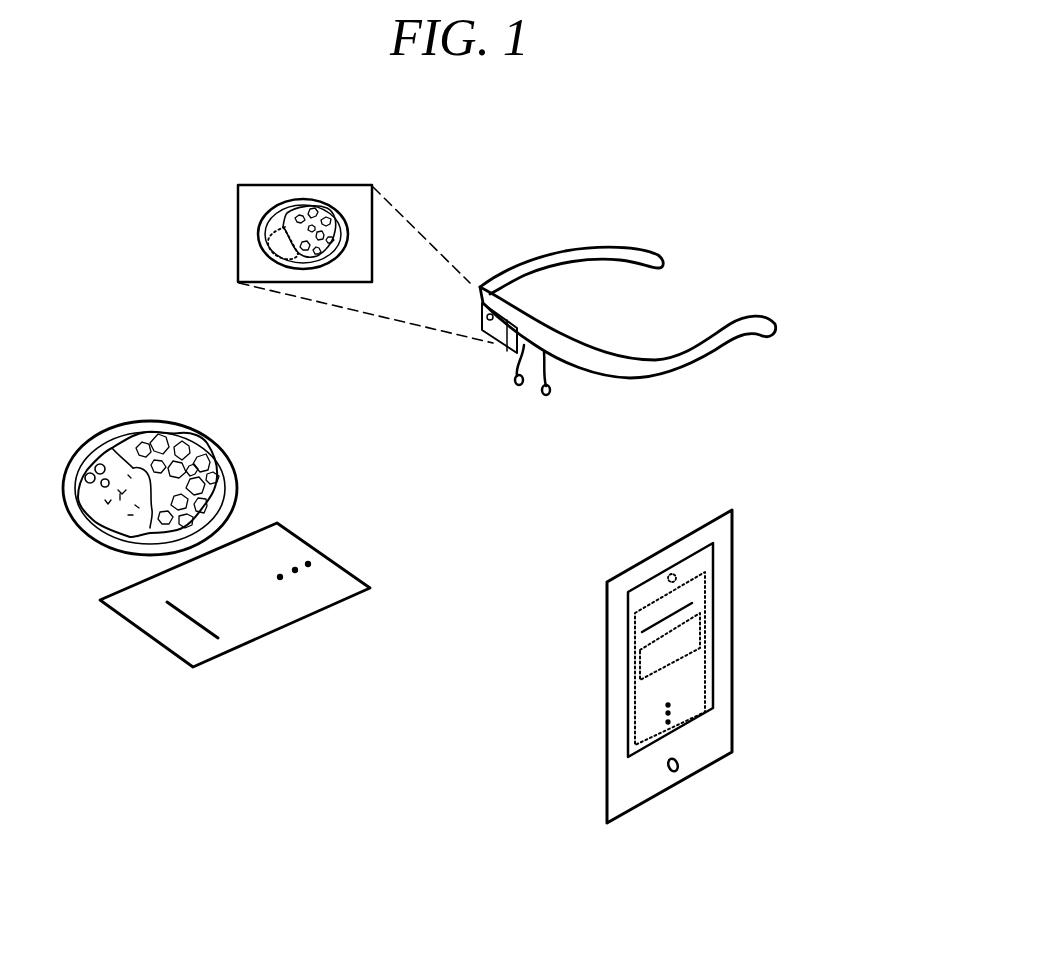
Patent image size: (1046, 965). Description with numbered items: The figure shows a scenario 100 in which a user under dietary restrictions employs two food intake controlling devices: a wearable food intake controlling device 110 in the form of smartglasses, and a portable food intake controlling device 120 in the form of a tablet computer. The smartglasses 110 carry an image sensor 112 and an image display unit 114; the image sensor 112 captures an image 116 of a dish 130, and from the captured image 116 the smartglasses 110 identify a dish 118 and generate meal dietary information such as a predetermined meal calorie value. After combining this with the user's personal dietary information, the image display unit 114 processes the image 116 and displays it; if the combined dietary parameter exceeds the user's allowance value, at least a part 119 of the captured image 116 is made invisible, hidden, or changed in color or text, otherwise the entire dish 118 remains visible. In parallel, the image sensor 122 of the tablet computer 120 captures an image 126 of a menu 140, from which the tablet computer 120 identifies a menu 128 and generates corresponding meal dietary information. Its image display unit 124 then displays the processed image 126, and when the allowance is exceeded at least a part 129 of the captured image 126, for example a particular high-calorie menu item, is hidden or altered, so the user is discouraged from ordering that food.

The scenario 100 is at (726, 181).
The food intake controlling device (smartglasses) 110 is at (608, 226).
The image sensor 112 is at (480, 310).
The image display unit 114 is at (500, 317).
The captured image 116 is at (258, 185).
The identified dish 118 is at (313, 203).
The part of captured image 119 is at (260, 242).
The food intake controlling device (tablet computer) 120 is at (747, 537).
The image sensor 122 is at (670, 575).
The image display unit 124 is at (724, 691).
The captured image 126 is at (713, 585).
The identified menu 128 is at (633, 737).
The part of captured image 129 is at (700, 615).
The dish 130 is at (238, 482).
The menu 140 is at (308, 605).